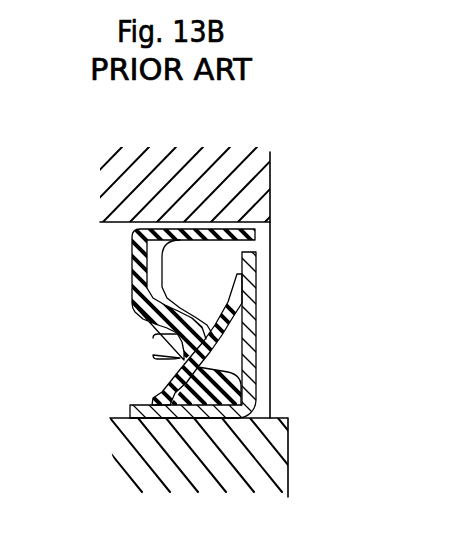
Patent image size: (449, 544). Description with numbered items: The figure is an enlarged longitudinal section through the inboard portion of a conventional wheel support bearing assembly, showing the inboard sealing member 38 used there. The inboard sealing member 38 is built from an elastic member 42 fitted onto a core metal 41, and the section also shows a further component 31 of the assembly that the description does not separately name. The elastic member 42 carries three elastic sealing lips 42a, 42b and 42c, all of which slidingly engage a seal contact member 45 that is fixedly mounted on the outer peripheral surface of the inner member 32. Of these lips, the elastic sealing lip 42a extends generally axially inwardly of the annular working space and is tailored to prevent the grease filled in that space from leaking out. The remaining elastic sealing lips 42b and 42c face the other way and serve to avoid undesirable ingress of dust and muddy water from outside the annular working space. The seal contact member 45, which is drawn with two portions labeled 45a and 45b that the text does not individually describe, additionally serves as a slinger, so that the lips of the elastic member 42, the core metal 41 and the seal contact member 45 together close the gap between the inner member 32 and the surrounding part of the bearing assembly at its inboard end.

The housing 31 is at (270, 201).
The inner member 32 is at (266, 456).
The inboard sealing member 38 is at (118, 263).
The core metal 41 is at (210, 222).
The elastic member 42 is at (152, 347).
The elastic sealing lip 42a is at (161, 420).
The elastic sealing lip 42b is at (257, 388).
The elastic sealing lip 42c is at (236, 302).
The seal contact member 45 is at (256, 357).
The flange portion of metal case 45a is at (208, 418).
The cylindrical portion of metal case 45b is at (256, 337).